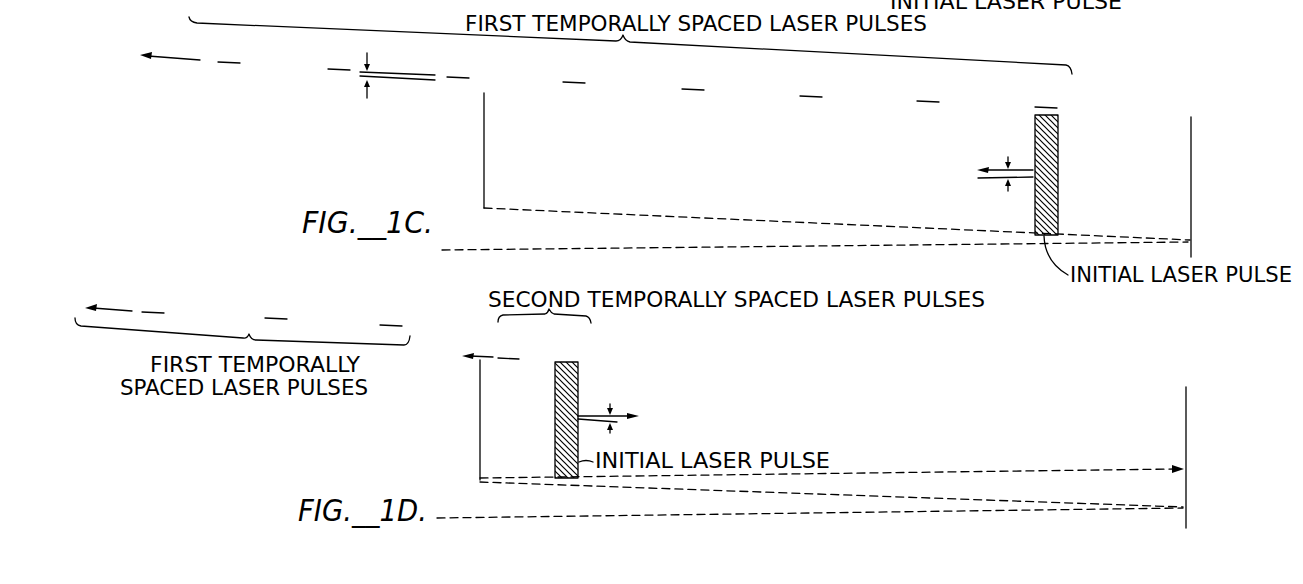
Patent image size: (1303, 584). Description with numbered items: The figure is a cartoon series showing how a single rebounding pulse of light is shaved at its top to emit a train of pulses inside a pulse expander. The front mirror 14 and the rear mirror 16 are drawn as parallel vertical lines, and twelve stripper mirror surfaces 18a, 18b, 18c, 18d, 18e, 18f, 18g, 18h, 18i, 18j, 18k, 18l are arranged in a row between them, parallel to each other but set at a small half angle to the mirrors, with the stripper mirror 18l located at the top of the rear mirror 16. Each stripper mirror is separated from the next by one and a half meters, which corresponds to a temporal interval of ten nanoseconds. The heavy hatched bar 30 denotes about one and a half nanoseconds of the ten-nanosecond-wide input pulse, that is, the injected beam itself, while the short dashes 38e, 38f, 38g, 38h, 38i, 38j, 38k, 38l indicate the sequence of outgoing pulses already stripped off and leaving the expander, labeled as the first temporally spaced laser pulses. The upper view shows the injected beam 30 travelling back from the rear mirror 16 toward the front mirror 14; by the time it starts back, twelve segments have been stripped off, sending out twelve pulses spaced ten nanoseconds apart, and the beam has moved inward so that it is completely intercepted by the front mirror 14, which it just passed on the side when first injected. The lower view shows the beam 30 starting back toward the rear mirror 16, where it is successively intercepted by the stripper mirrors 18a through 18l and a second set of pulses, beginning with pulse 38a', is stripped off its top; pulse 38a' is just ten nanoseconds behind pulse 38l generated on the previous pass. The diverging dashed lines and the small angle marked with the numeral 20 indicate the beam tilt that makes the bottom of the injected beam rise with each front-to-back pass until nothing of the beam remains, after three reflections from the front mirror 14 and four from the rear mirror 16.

In FIG. 1C, the front mirror 14 is at (488, 157).
In FIG. 1D, the front mirror 14 is at (482, 407).
In FIG. 1C, the rear mirror 16 is at (1189, 198).
In FIG. 1D, the rear mirror 16 is at (1184, 437).
In FIG. 1C, the stripper mirror surface 18a is at (543, 93).
In FIG. 1D, the stripper mirror surface 18a is at (540, 360).
In FIG. 1C, the stripper mirror surface 18b is at (605, 95).
In FIG. 1D, the stripper mirror surface 18b is at (600, 362).
In FIG. 1C, the stripper mirror surface 18c is at (663, 98).
In FIG. 1D, the stripper mirror surface 18c is at (657, 367).
In FIG. 1C, the stripper mirror surface 18d is at (723, 102).
In FIG. 1D, the stripper mirror surface 18d is at (720, 370).
In FIG. 1C, the stripper mirror surface 18e is at (780, 105).
In FIG. 1D, the stripper mirror surface 18e is at (777, 373).
In FIG. 1C, the stripper mirror surface 18f is at (842, 105).
In FIG. 1D, the stripper mirror surface 18f is at (835, 375).
In FIG. 1C, the stripper mirror surface 18g is at (900, 107).
In FIG. 1D, the stripper mirror surface 18g is at (895, 378).
In FIG. 1C, the stripper mirror surface 18h is at (958, 110).
In FIG. 1D, the stripper mirror surface 18h is at (953, 378).
In FIG. 1C, the stripper mirror surface 18i is at (1018, 112).
In FIG. 1D, the stripper mirror surface 18i is at (1013, 382).
In FIG. 1C, the stripper mirror surface 18j is at (1075, 115).
In FIG. 1D, the stripper mirror surface 18j is at (1073, 385).
In FIG. 1C, the stripper mirror surface 18k is at (1133, 118).
In FIG. 1D, the stripper mirror surface 18k is at (1132, 387).
In FIG. 1C, the stripper mirror surface 18l is at (1192, 117).
In FIG. 1D, the stripper mirror surface 18l is at (1187, 387).
In FIG. 1C, the beam axis / angular deflection 20 is at (378, 78).
In FIG. 1D, the beam axis / angular deflection 20 is at (614, 421).
In FIG. 1C, the heavy bar (injected beam) 30 is at (1058, 203).
In FIG. 1D, the heavy bar (injected beam) 30 is at (555, 446).
In FIG. 1D, the pulse 38a' is at (485, 343).
In FIG. 1C, the outgoing pulse 38e is at (218, 62).
In FIG. 1C, the outgoing pulse 38f is at (328, 69).
In FIG. 1C, the outgoing pulse 38g is at (447, 77).
In FIG. 1C, the outgoing pulse 38h is at (563, 82).
In FIG. 1C, the outgoing pulse 38i is at (682, 89).
In FIG. 1C, the outgoing pulse 38j is at (800, 96).
In FIG. 1D, the outgoing pulse 38j is at (149, 292).
In FIG. 1C, the outgoing pulse 38k is at (917, 101).
In FIG. 1D, the outgoing pulse 38k is at (265, 318).
In FIG. 1C, the outgoing pulse 38l is at (1035, 107).
In FIG. 1D, the outgoing pulse 38l is at (380, 325).